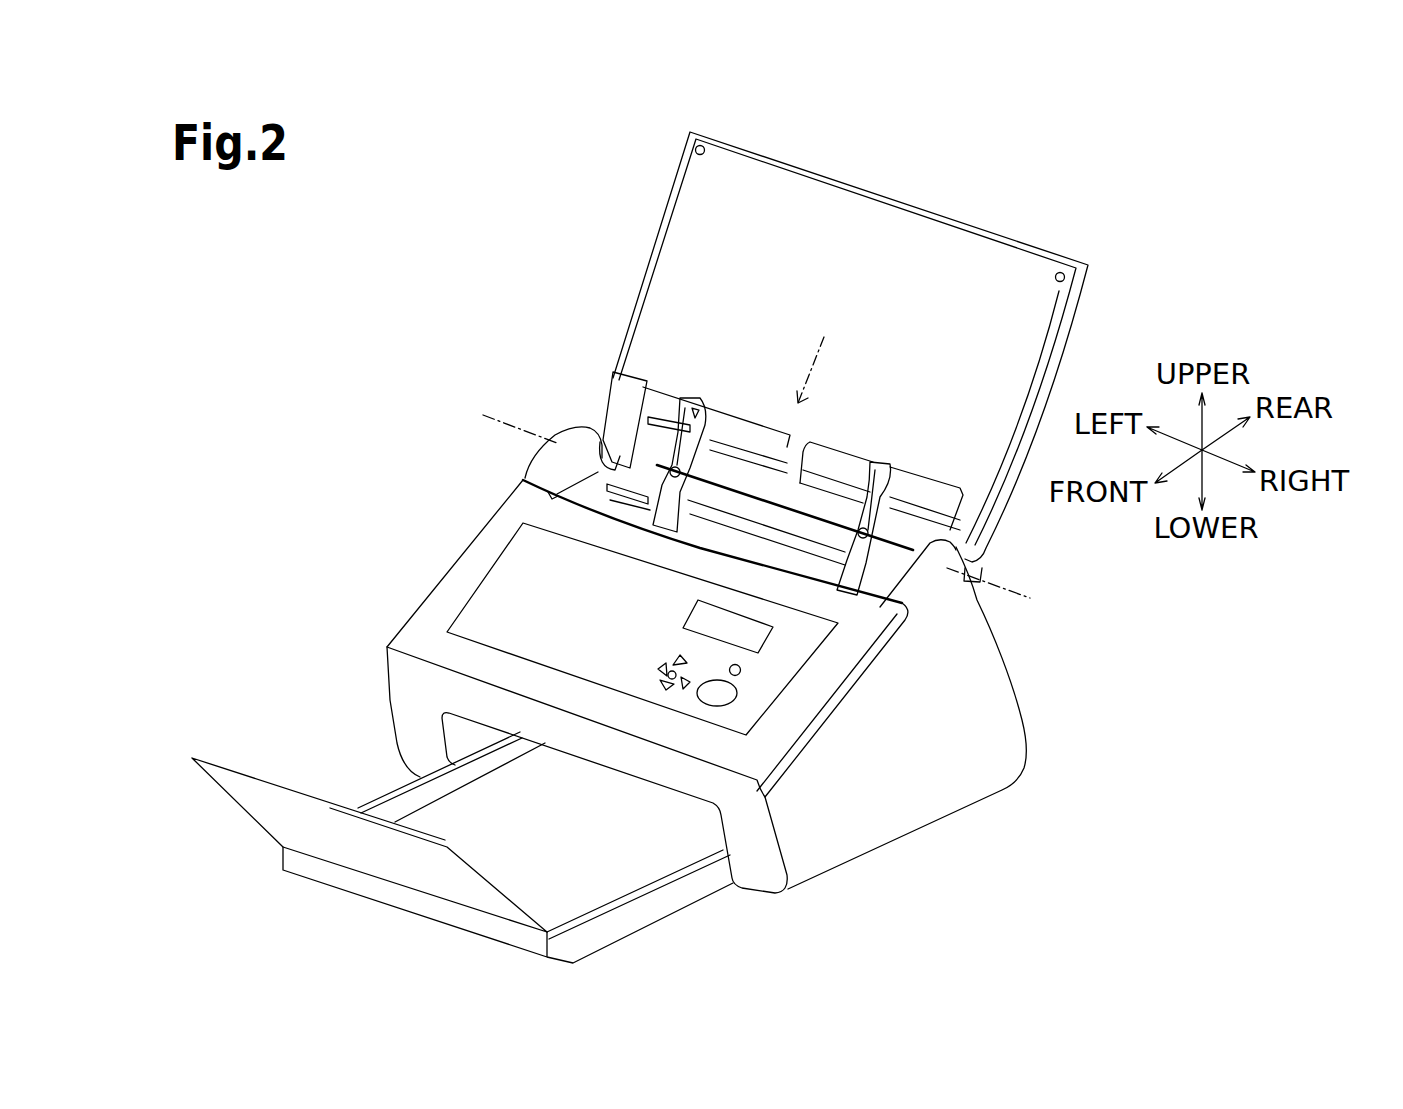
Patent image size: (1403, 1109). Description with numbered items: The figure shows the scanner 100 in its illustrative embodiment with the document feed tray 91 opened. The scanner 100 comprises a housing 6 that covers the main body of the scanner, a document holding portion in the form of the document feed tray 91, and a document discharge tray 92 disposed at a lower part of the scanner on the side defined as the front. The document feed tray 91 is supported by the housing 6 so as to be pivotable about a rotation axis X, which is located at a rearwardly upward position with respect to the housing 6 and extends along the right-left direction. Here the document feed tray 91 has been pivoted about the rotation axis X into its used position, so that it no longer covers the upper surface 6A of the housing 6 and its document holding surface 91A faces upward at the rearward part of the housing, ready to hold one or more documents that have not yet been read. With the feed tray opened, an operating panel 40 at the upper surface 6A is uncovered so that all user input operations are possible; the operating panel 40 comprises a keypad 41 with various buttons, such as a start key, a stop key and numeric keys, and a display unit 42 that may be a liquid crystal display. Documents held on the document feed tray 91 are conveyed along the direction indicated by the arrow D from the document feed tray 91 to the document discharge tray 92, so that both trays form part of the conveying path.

The scanner 100 is at (549, 300).
The housing 6 is at (1003, 675).
The upper surface 6A is at (468, 567).
The operating panel 40 is at (1104, 842).
The keypad 41 is at (723, 693).
The display unit 42 is at (757, 640).
The document feed tray 91 is at (1075, 349).
The document holding surface 91A is at (926, 237).
The document discharge tray 92 is at (377, 893).
The arrow D is at (816, 354).
The rotation axis X is at (746, 498).